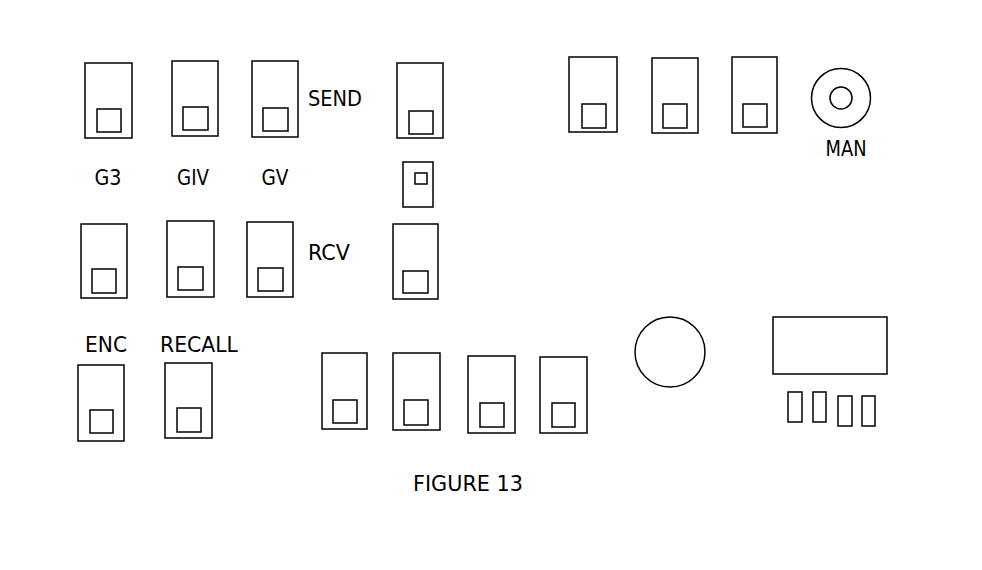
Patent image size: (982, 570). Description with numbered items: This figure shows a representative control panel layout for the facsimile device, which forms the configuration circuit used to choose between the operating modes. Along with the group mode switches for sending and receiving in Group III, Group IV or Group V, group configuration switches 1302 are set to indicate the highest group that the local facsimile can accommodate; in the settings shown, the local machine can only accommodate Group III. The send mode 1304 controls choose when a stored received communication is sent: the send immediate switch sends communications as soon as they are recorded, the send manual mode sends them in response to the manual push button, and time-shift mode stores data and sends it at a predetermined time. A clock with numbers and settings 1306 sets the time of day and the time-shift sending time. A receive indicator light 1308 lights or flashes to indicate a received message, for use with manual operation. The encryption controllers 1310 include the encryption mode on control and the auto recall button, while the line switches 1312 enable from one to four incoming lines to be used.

The group configuration switches 1302 is at (420, 57).
The send mode 1304 is at (587, 34).
The clock 1306 is at (807, 305).
The receive indicator light 1308 is at (630, 340).
The encryption controllers 1310 is at (118, 462).
The line switches 1312 is at (320, 437).